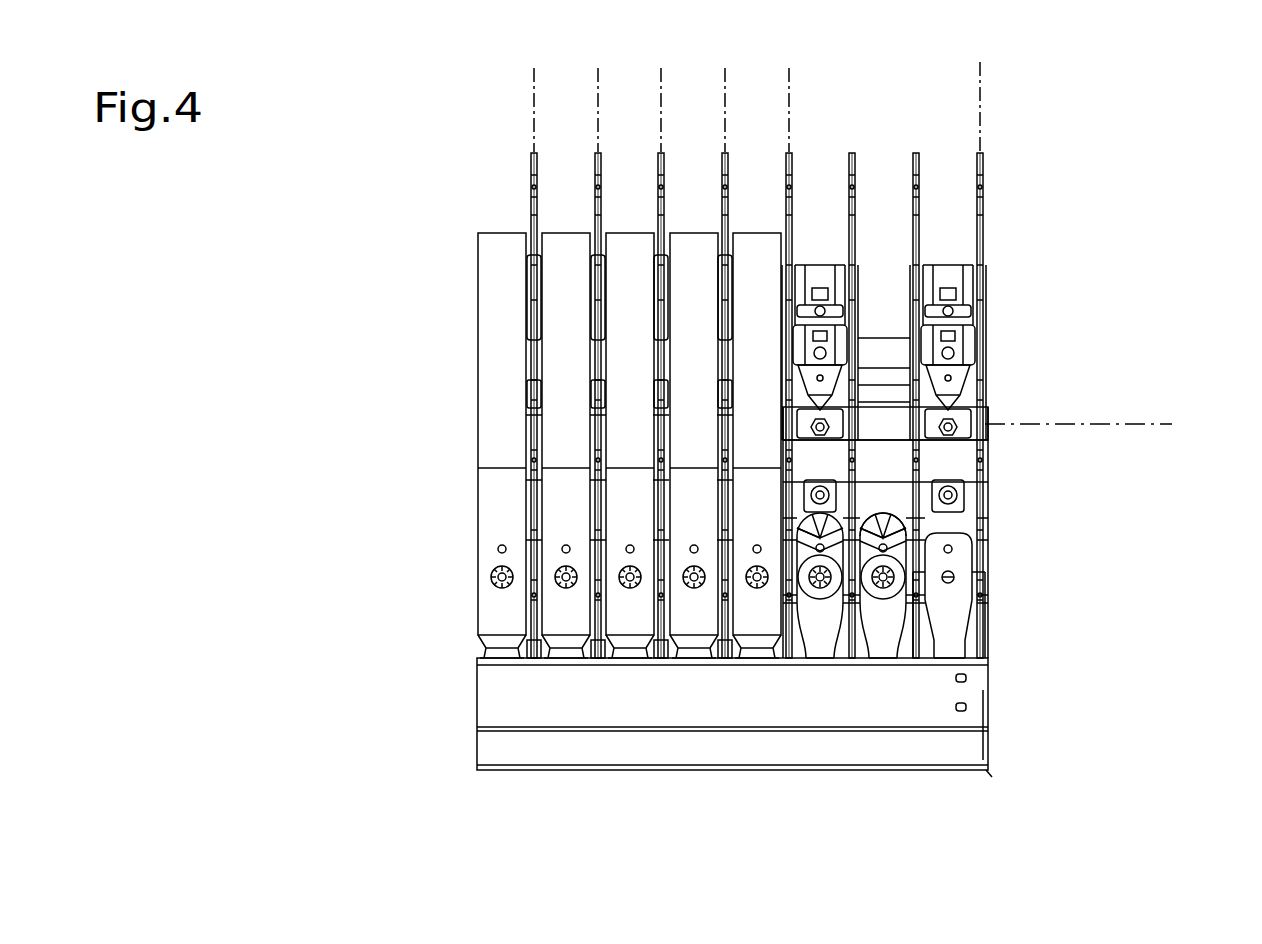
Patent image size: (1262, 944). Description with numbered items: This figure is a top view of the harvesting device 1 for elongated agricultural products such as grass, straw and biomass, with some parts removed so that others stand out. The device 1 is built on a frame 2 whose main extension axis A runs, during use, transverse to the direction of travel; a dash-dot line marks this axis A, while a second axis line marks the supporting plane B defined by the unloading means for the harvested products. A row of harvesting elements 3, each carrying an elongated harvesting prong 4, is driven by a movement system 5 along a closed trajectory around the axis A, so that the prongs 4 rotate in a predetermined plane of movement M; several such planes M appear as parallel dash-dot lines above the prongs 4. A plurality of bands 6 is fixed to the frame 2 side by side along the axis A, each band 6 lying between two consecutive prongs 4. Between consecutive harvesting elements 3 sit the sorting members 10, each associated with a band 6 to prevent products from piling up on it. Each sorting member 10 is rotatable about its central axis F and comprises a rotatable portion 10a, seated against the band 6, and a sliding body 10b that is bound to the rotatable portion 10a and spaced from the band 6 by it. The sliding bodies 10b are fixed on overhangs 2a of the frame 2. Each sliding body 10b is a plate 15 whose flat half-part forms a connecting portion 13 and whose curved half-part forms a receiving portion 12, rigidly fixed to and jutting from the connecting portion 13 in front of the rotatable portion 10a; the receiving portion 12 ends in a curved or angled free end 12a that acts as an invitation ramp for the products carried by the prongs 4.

The harvesting device 1 is at (1113, 176).
The frame 2 is at (964, 596).
The overhang 2a is at (963, 557).
The harvesting element 3 is at (988, 338).
The elongated harvesting prong 4 is at (655, 170).
The movement system 5 is at (988, 402).
The band 6 is at (497, 233).
The sorting member 10 is at (898, 603).
The rotatable portion 10a is at (910, 548).
The sliding body 10b is at (882, 512).
The receiving portion 12 is at (829, 510).
The curved or angled free end 12a is at (800, 517).
The connecting portion 13 is at (908, 588).
The plate 15 is at (914, 530).
The plane of movement M is at (534, 72).
The central axis F is at (496, 577).
The main extension axis A is at (1157, 424).
The supporting plane B is at (980, 108).